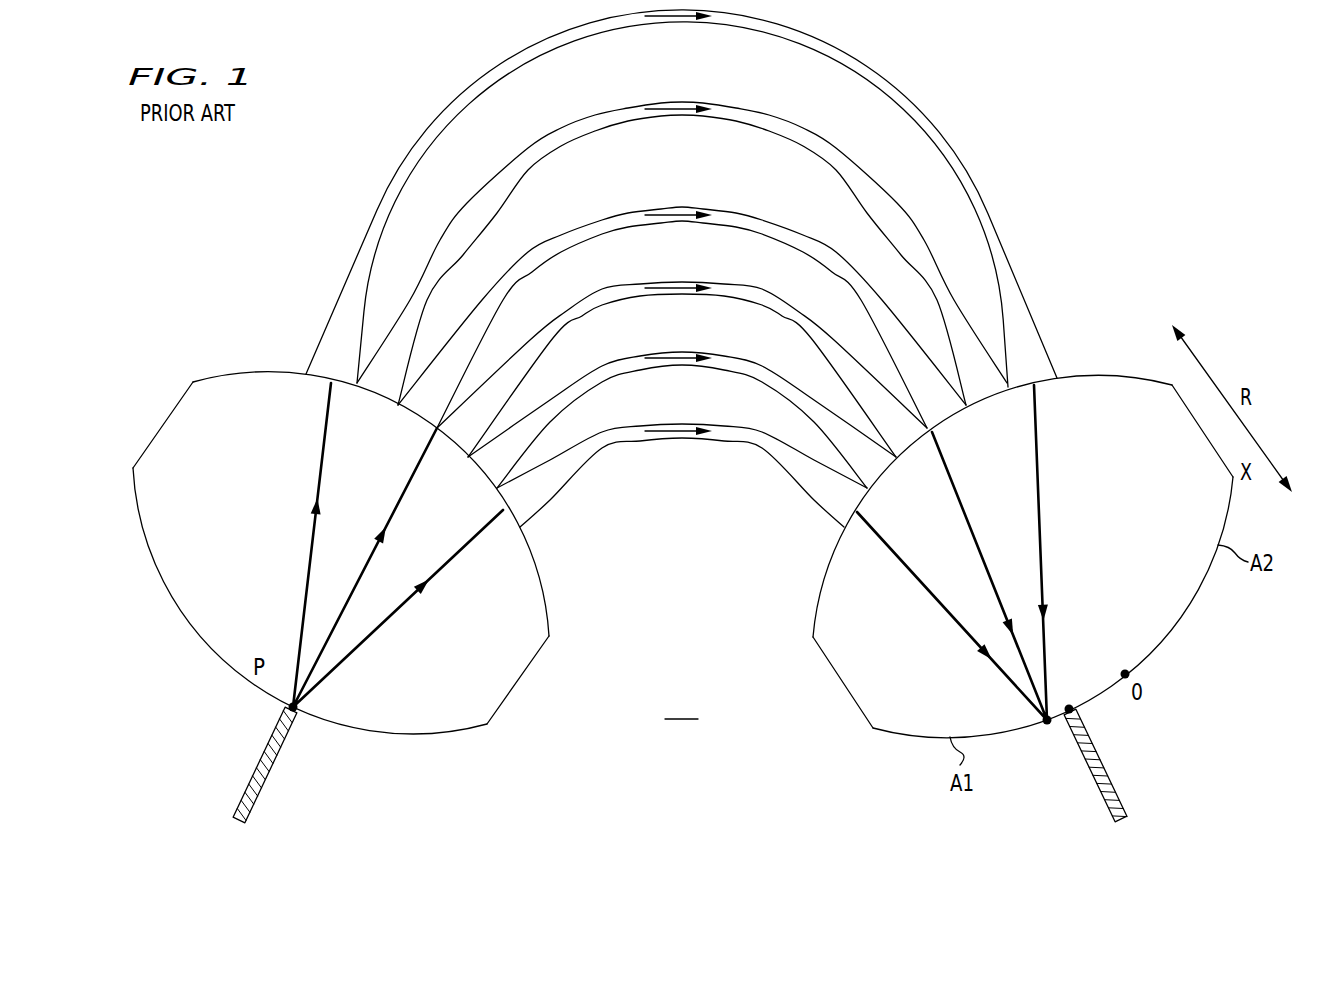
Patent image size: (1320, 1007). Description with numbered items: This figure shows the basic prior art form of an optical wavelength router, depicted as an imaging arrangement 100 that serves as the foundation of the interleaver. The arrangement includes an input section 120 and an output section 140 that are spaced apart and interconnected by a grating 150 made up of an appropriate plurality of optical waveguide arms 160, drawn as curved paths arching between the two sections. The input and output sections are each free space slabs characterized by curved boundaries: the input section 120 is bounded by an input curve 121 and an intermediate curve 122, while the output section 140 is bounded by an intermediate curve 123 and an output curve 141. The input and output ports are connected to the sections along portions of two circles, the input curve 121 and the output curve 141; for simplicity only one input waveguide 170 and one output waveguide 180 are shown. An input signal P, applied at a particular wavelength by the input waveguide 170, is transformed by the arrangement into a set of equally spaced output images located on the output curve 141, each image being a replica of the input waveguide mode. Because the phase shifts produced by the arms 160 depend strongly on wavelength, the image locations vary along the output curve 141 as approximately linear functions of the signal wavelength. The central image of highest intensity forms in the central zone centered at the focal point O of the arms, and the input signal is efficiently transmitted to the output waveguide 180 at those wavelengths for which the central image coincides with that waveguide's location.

The imaging arrangement 100 is at (681, 708).
The input section 120 is at (367, 582).
The input curve 121 is at (408, 738).
The intermediate curve 122 is at (537, 570).
The intermediate curve 123 is at (833, 553).
The output section 140 is at (989, 592).
The output curve 141 is at (920, 738).
The grating 150 is at (936, 126).
The optical waveguide arms 160 is at (622, 33).
The input waveguide 170 is at (262, 775).
The output waveguide 180 is at (1110, 775).